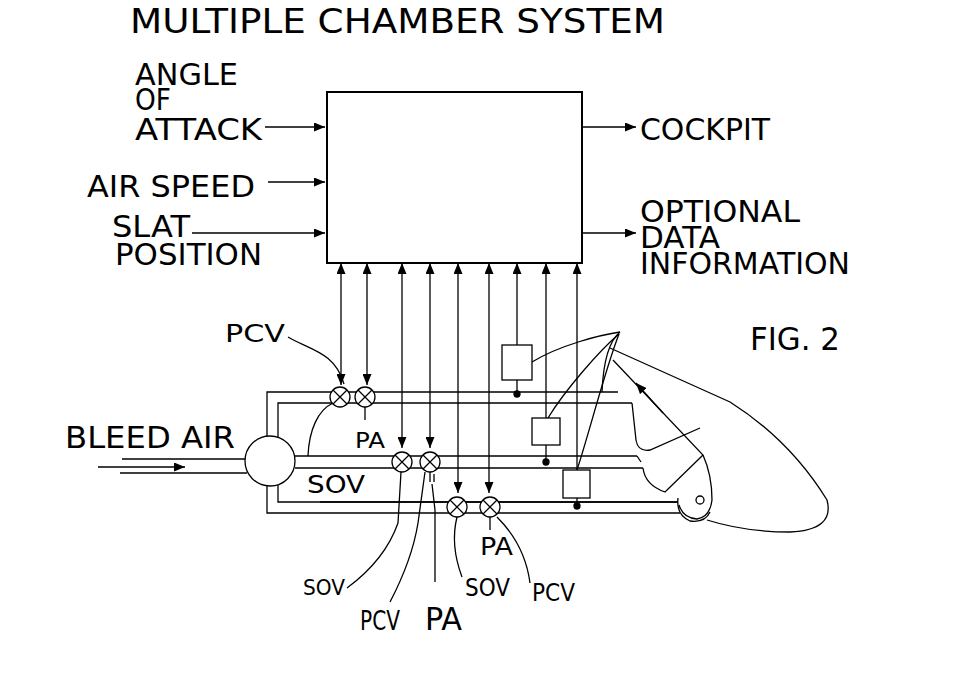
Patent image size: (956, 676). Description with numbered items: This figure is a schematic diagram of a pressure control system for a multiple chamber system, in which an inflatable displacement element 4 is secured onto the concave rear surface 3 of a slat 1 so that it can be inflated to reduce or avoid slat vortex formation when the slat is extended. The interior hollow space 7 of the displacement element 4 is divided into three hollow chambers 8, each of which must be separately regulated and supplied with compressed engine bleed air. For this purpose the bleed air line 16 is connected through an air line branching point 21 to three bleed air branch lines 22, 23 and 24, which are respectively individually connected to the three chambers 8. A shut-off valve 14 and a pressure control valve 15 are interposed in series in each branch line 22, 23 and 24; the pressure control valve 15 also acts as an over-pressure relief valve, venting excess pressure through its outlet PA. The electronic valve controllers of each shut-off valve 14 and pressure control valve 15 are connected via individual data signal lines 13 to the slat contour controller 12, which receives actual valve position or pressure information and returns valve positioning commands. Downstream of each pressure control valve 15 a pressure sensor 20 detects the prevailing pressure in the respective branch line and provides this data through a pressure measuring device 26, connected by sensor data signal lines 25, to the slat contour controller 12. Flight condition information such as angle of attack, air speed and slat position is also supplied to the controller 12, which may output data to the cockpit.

The slat 1 is at (803, 496).
The concave rear surface 3 is at (718, 515).
The displacement element 4 is at (708, 522).
The hollow space 7 is at (667, 422).
The hollow chambers 8 is at (698, 434).
The slat contour controller 12 is at (532, 104).
The data signal lines 13 is at (490, 320).
The shut-off valve 14 is at (336, 388).
The pressure control valve 15 is at (377, 391).
The bleed air line 16 is at (215, 478).
The pressure sensor 20 is at (517, 396).
The air line branching point 21 is at (268, 468).
The first bleed air branch line 22 is at (290, 395).
The second bleed air branch line 23 is at (307, 460).
The third bleed air branch line 24 is at (320, 512).
The sensor data signal lines 25 is at (518, 303).
The pressure measuring device 26 is at (619, 333).